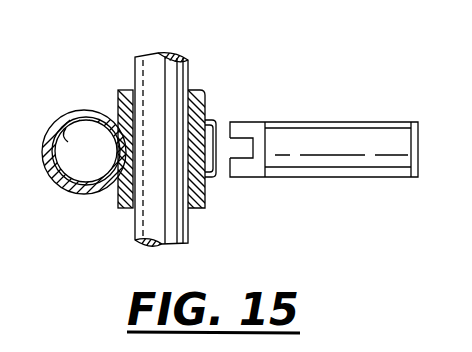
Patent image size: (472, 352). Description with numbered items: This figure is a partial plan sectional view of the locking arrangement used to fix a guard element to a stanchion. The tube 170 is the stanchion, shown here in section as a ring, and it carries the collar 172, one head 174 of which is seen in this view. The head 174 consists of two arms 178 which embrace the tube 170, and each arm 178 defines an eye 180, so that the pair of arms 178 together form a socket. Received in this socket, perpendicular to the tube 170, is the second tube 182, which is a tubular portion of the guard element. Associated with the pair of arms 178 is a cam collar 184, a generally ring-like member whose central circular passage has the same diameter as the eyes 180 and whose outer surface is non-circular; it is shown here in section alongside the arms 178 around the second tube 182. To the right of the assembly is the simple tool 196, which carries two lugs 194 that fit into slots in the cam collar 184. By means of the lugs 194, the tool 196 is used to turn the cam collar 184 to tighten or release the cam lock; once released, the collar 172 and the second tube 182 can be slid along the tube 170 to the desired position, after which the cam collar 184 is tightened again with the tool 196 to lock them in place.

The tube 170 is at (63, 108).
The collar 172 is at (70, 194).
The head 174 is at (99, 85).
The arm 178 is at (200, 90).
The eye 180 is at (208, 103).
The second tube 182 is at (150, 72).
The cam collar 184 is at (122, 90).
The lug 194 is at (243, 173).
The tool 196 is at (353, 150).